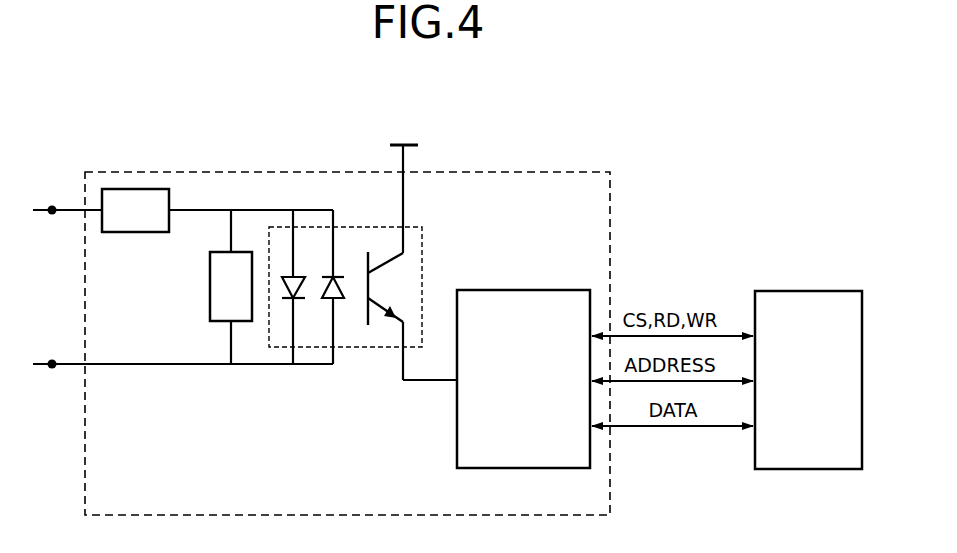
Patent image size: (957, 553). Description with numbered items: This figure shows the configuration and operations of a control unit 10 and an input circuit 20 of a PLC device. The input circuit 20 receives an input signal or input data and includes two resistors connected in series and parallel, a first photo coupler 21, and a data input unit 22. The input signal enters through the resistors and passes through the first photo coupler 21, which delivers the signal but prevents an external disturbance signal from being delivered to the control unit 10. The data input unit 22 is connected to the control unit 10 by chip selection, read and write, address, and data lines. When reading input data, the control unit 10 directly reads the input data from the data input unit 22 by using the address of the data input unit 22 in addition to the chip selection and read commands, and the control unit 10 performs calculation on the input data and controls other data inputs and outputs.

The control unit 10 is at (808, 291).
The input circuit 20 is at (260, 172).
The first photo coupler 21 is at (352, 227).
The data input unit 22 is at (544, 290).